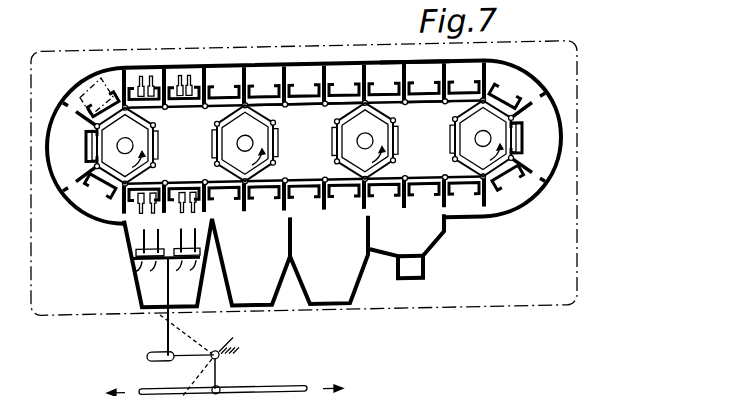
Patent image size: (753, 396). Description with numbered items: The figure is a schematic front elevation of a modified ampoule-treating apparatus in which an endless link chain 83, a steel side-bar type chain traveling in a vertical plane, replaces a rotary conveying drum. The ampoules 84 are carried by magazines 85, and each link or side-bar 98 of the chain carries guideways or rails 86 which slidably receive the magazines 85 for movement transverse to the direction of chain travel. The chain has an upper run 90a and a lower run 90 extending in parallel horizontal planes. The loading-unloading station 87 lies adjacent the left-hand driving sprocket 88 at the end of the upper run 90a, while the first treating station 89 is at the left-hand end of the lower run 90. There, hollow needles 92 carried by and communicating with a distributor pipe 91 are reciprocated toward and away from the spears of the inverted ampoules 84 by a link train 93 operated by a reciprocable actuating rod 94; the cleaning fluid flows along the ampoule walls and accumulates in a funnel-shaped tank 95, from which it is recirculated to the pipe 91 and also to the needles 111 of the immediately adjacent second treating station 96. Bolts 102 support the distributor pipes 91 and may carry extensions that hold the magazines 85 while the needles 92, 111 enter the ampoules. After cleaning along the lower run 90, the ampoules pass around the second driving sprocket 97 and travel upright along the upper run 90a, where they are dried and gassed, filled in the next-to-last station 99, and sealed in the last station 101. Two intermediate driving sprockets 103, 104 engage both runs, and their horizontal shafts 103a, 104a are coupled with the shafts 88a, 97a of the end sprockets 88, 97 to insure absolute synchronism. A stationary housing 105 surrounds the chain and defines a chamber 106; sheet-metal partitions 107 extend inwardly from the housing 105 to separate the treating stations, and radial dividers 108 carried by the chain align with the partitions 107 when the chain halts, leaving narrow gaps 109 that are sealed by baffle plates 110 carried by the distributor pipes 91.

The link chain 83 is at (300, 112).
The ampoules 84 is at (192, 80).
The magazines 85 is at (185, 97).
The guideways or rails 86 is at (293, 97).
The loading-unloading station 87 is at (93, 84).
The left-hand driving sprocket 88 is at (143, 145).
The horizontal shaft of sprocket 88 88a is at (125, 140).
The first treating station 89 is at (140, 225).
The lower run 90 is at (282, 175).
The upper run 90a is at (332, 116).
The distributor pipe 91 is at (148, 249).
The hollow needles 92 is at (140, 240).
The link train 93 is at (186, 355).
The reciprocable actuating rod 94 is at (272, 385).
The funnel-shaped receptacle or tank 95 is at (199, 290).
The second treating station 96 is at (185, 233).
The second driving sprocket 97 is at (512, 138).
The horizontal shaft of sprocket 97 97a is at (491, 144).
The link or side-bar 98 is at (425, 105).
The next-to-last station 99 is at (173, 67).
The last station 101 is at (130, 64).
The bolts 102 is at (166, 347).
The intermediate driving sprocket 103 is at (227, 144).
The horizontal shaft of sprocket 103 103a is at (243, 135).
The intermediate driving sprocket 104 is at (366, 140).
The horizontal shaft of sprocket 104 104a is at (373, 143).
The stationary housing 105 is at (537, 77).
The chamber or space 106 is at (416, 69).
The partitions 107 is at (365, 64).
The radial walls or dividers 108 is at (250, 83).
The gaps 109 is at (214, 207).
The baffle plates 110 is at (166, 260).
The needles 111 is at (185, 243).